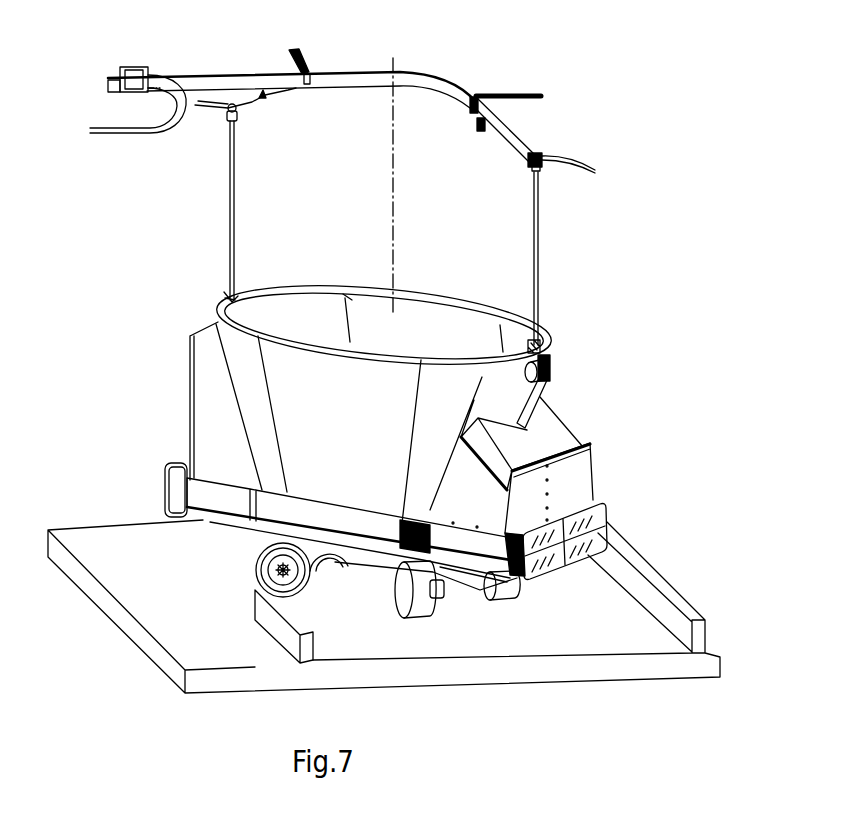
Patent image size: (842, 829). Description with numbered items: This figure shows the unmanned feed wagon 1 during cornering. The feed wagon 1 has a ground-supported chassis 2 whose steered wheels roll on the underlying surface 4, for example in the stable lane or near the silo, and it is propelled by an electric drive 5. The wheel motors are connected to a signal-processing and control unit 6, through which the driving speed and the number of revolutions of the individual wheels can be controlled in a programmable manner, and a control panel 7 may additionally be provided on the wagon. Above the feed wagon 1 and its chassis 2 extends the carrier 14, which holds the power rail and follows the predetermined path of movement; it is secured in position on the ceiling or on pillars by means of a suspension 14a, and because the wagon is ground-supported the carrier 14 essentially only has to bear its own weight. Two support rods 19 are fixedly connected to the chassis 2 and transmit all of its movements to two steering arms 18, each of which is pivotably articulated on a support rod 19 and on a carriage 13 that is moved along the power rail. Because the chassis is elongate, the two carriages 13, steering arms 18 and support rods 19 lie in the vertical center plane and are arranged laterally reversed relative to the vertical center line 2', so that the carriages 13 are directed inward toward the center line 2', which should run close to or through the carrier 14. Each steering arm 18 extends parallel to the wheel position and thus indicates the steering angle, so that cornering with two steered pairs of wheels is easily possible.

The feed wagon 1 is at (725, 175).
The chassis 2 is at (386, 540).
The vertical center line 2' is at (417, 185).
The underlying surface 4 is at (384, 606).
The electric drive 5 is at (283, 570).
The signal-processing and control unit 6 is at (216, 418).
The control panel 7 is at (177, 366).
The carriage 13 is at (290, 102).
The carrier 14 is at (424, 80).
The suspension 14a is at (527, 84).
The steering arm 18 is at (240, 112).
The support rod 19 is at (230, 222).